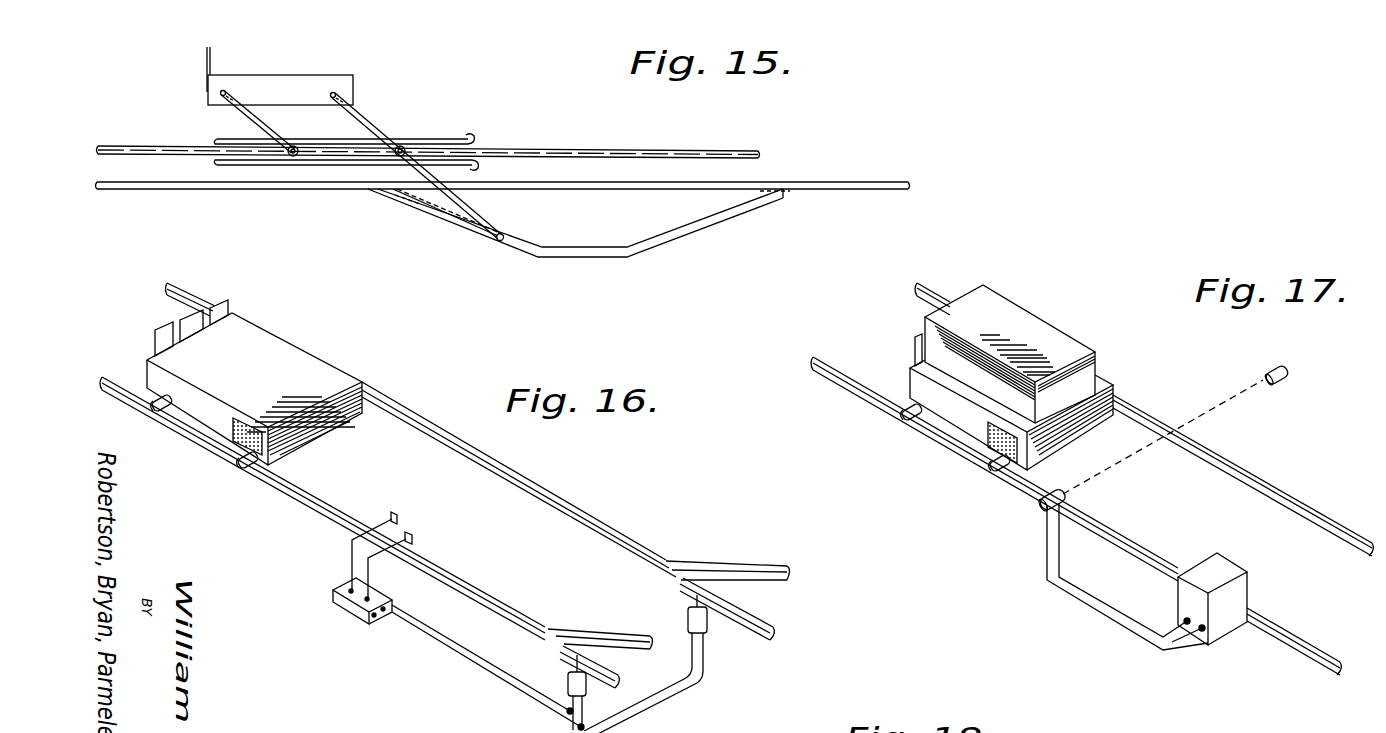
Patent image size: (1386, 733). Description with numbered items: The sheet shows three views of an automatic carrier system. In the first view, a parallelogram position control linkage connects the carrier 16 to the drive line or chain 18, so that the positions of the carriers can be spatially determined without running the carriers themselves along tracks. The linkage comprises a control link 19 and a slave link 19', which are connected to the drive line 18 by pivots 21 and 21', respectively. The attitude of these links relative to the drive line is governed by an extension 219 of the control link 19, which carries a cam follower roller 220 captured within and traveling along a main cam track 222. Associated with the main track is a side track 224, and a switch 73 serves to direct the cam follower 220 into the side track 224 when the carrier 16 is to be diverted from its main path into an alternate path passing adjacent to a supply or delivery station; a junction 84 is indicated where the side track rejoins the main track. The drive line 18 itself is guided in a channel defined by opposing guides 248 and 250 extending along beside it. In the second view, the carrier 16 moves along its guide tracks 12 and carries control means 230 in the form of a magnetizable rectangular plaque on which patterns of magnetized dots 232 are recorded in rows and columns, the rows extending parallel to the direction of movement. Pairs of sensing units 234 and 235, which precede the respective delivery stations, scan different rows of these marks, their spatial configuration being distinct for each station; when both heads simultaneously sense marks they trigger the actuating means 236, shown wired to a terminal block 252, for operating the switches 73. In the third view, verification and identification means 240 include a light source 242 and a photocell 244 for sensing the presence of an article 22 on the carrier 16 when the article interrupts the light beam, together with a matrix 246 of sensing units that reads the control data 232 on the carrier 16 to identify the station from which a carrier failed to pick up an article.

In FIG. 15, the carrier 16 is at (305, 75).
In FIG. 16, the carrier 16 is at (313, 371).
In FIG. 17, the carrier 16 is at (1120, 383).
In FIG. 15, the drive line or chain 18 is at (128, 147).
In FIG. 15, the control link 19 is at (416, 163).
In FIG. 15, the slave link 19' is at (270, 122).
In FIG. 15, the pivot 21 is at (436, 125).
In FIG. 15, the pivot 21' is at (284, 184).
In FIG. 15, the guide 248 is at (470, 139).
In FIG. 15, the guide 250 is at (480, 164).
In FIG. 15, the extension 219 is at (470, 209).
In FIG. 15, the cam follower roller 220 is at (497, 246).
In FIG. 15, the side track 224 is at (668, 236).
In FIG. 15, the switch 73 is at (396, 200).
In FIG. 16, the switch 73 is at (706, 558).
In FIG. 15, the junction 84 is at (772, 202).
In FIG. 15, the main cam track 222 is at (838, 191).
In FIG. 16, the magnetized dots 232 is at (250, 433).
In FIG. 17, the magnetized dots 232 is at (1002, 442).
In FIG. 16, the control means 230 is at (235, 420).
In FIG. 17, the control means 230 is at (987, 441).
In FIG. 16, the guide tracks 12 is at (607, 526).
In FIG. 17, the guide tracks 12 is at (1292, 493).
In FIG. 16, the sensing unit 234 is at (396, 515).
In FIG. 16, the sensing unit 235 is at (410, 543).
In FIG. 16, the actuating means 236 is at (568, 686).
In FIG. 16, the terminal block 252 is at (457, 655).
In FIG. 17, the article 22 is at (1030, 321).
In FIG. 17, the light source 242 is at (1280, 384).
In FIG. 17, the photocell 244 is at (1045, 511).
In FIG. 17, the verification and identification means 240 is at (1104, 623).
In FIG. 17, the matrix of sensing units 246 is at (1247, 588).